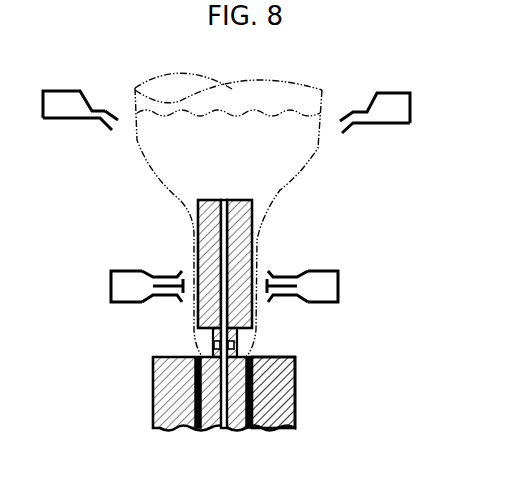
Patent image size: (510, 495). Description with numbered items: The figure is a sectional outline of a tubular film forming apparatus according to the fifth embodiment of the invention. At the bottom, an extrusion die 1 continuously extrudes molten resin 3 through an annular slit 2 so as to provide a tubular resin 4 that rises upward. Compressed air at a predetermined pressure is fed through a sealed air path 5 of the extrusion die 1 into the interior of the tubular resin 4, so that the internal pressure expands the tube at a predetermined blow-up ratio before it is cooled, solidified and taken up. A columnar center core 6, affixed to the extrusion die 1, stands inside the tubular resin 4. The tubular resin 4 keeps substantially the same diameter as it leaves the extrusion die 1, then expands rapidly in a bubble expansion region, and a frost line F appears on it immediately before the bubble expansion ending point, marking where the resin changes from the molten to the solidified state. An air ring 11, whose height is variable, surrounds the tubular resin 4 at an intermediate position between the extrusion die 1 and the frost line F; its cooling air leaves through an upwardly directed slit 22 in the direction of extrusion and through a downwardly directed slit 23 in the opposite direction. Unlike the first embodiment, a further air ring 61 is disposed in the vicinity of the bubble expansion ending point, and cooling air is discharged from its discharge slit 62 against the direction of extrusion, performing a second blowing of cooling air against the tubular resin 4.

The extrusion die 1 is at (243, 336).
The annular slit 2 is at (250, 356).
The molten resin 3 is at (262, 376).
The tubular resin 4 is at (268, 206).
The sealed air path 5 is at (225, 428).
The center core 6 is at (244, 249).
The air ring 11 is at (122, 277).
The upwardly directed slit 22 is at (178, 272).
The downwardly directed slit 23 is at (178, 300).
The air ring 61 is at (57, 99).
The discharge slit 62 is at (113, 132).
The frost line F is at (253, 114).